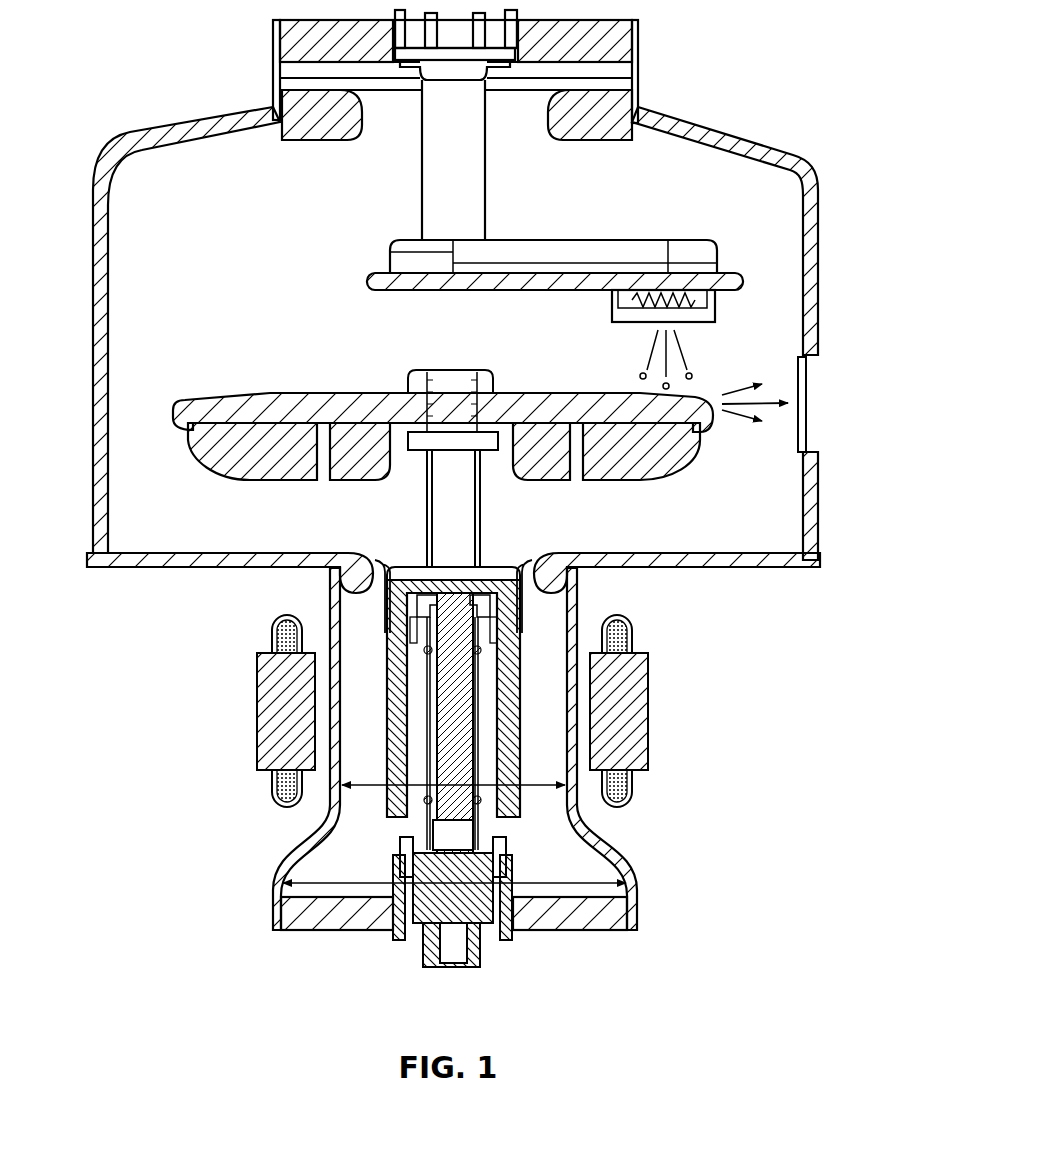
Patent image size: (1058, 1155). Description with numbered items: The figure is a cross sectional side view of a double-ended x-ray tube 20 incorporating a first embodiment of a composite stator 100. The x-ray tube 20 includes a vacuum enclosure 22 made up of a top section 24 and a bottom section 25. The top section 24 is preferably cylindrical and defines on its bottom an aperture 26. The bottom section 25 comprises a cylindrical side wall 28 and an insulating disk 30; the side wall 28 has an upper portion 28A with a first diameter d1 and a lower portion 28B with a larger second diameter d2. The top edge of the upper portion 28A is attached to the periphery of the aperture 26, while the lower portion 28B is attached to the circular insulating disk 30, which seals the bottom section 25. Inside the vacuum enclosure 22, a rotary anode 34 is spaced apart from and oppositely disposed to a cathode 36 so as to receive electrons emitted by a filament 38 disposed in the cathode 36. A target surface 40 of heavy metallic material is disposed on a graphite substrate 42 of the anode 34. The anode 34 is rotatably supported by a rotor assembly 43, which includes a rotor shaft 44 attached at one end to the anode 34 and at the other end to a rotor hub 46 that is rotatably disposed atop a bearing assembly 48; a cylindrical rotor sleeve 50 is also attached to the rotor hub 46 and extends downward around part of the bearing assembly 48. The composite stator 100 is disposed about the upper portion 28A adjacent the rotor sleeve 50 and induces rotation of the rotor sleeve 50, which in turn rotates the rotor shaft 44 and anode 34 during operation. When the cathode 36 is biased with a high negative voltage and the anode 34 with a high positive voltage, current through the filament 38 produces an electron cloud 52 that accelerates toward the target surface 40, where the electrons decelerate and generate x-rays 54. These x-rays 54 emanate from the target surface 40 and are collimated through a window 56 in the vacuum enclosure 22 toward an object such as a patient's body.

The double-ended x-ray tube 20 is at (165, 115).
The vacuum enclosure 22 is at (770, 135).
The top section 24 is at (820, 238).
The bottom section 25 is at (580, 610).
The aperture 26 is at (538, 545).
The cylindrical side wall 28 is at (398, 749).
The upper portion 28A is at (327, 603).
The lower portion 28B is at (270, 885).
The insulating disk 30 is at (577, 930).
The rotary anode 34 is at (430, 427).
The cathode 36 is at (715, 312).
The filament 38 is at (645, 308).
The target surface 40 is at (222, 398).
The graphite substrate 42 is at (235, 470).
The rotor assembly 43 is at (436, 679).
The rotor shaft 44 is at (483, 520).
The rotor hub 46 is at (388, 562).
The bearing assembly 48 is at (490, 607).
The rotor sleeve 50 is at (385, 690).
The electron cloud 52 is at (690, 375).
The x-rays 54 is at (735, 413).
The window 56 is at (810, 432).
The composite stator 100 is at (692, 718).
The first diameter d1 is at (527, 783).
The second diameter d2 is at (540, 883).